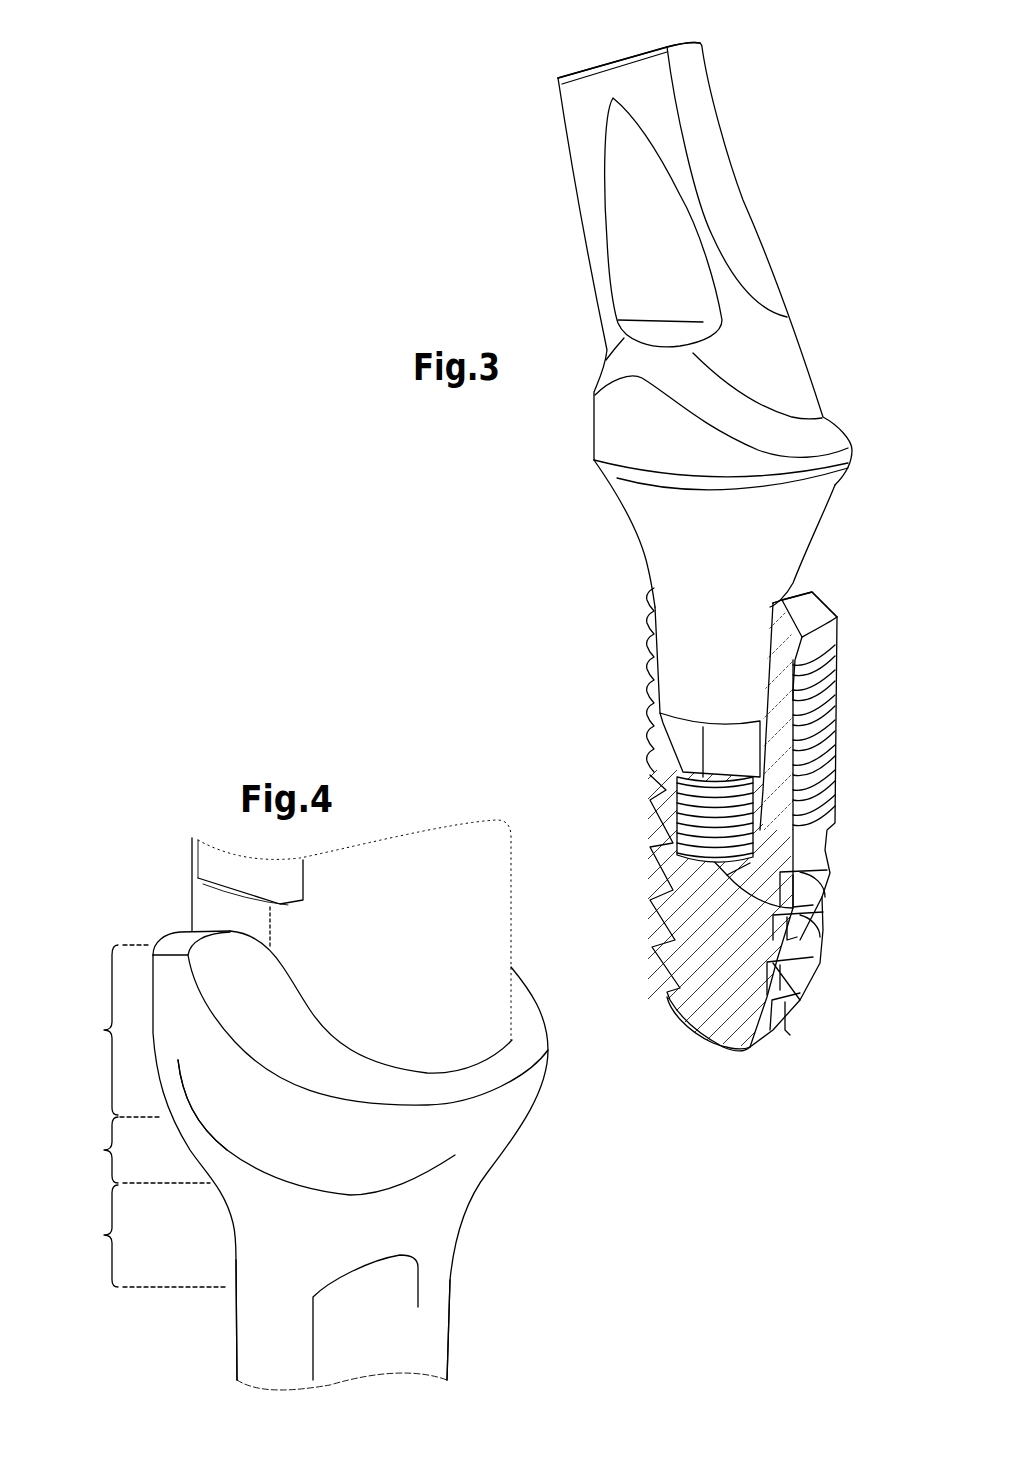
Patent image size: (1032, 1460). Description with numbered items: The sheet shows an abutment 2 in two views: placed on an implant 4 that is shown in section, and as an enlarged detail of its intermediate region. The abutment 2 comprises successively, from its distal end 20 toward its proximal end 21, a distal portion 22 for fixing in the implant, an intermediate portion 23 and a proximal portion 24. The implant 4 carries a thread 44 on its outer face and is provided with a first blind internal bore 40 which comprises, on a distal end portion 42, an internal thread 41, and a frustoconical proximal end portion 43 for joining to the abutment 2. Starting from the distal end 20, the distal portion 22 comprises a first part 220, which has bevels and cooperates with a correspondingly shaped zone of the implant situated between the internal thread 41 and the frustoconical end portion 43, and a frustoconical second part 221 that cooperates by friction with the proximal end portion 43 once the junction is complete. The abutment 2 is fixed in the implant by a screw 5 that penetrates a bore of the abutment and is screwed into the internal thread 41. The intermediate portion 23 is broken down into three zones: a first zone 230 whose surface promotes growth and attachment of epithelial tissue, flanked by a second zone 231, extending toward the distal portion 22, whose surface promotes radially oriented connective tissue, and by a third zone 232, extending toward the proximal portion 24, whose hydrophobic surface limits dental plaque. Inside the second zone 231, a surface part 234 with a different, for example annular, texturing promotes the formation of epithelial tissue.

In FIG. 3, the abutment 2 is at (800, 294).
In FIG. 3, the proximal end 21 is at (560, 65).
In FIG. 3, the proximal portion 24 is at (540, 210).
In FIG. 4, the proximal portion 24 is at (167, 880).
In FIG. 3, the intermediate portion 23 is at (577, 519).
In FIG. 4, the intermediate portion 23 is at (552, 1136).
In FIG. 3, the distal portion 22 is at (624, 687).
In FIG. 4, the distal portion 22 is at (214, 1337).
In FIG. 3, the second part 221 is at (665, 623).
In FIG. 3, the first part 220 is at (677, 751).
In FIG. 3, the implant 4 is at (652, 919).
In FIG. 3, the distal end portion 42 is at (632, 810).
In FIG. 3, the frustoconical proximal end portion 43 is at (783, 670).
In FIG. 3, the thread 44 is at (847, 722).
In FIG. 3, the distal end 20 is at (830, 787).
In FIG. 3, the internal thread 41 is at (800, 869).
In FIG. 3, the first blind internal bore 40 is at (800, 912).
In FIG. 3, the screw 5 is at (668, 818).
In FIG. 4, the third zone 232 is at (108, 1031).
In FIG. 4, the first zone 230 is at (133, 1150).
In FIG. 4, the second zone 231 is at (142, 1236).
In FIG. 4, the surface part 234 is at (157, 1246).